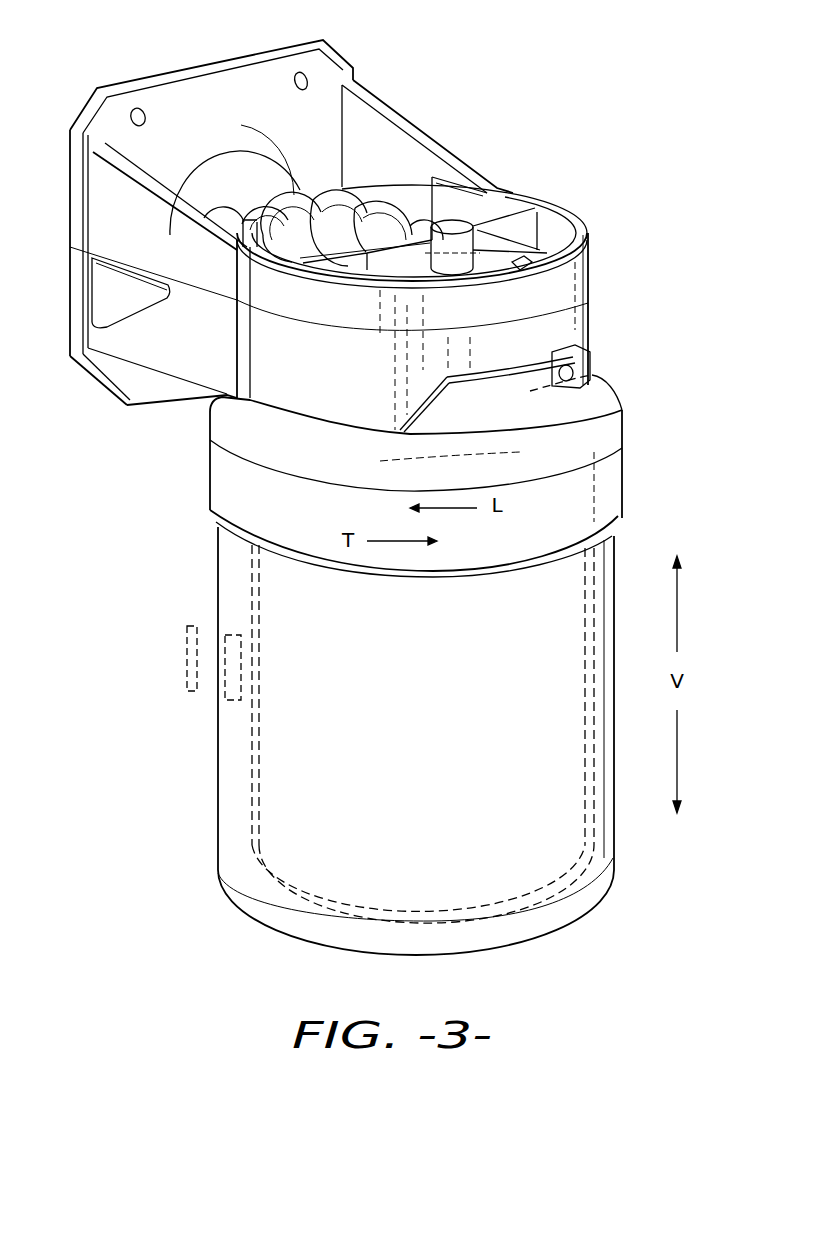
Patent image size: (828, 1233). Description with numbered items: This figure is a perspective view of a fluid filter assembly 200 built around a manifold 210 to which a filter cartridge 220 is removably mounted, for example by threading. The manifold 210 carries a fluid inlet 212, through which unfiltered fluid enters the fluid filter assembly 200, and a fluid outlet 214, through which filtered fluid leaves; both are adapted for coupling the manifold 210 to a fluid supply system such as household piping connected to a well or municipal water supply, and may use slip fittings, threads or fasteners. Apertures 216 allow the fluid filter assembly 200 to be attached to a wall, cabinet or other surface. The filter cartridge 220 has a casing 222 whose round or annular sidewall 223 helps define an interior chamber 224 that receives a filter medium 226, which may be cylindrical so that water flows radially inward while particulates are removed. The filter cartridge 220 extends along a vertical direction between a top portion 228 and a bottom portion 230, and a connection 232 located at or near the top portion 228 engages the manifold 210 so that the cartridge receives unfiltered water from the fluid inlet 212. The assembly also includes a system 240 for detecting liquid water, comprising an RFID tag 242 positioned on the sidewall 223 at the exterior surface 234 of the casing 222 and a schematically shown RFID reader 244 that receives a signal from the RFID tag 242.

The fluid filter assembly 200 is at (468, 92).
The manifold 210 is at (568, 286).
The fluid inlet 212 is at (274, 206).
The fluid outlet 214 is at (208, 212).
The apertures 216 is at (146, 108).
The filter cartridge 220 is at (215, 494).
The casing 222 is at (218, 803).
The sidewall 223 is at (617, 540).
The chamber 224 is at (585, 870).
The filter medium 226 is at (258, 750).
The top portion 228 is at (597, 375).
The bottom portion 230 is at (579, 916).
The connection 232 is at (531, 392).
The exterior surface 234 is at (218, 835).
The system for detecting liquid water 240 is at (154, 640).
The RFID tag 242 is at (220, 688).
The RFID reader 244 is at (182, 632).